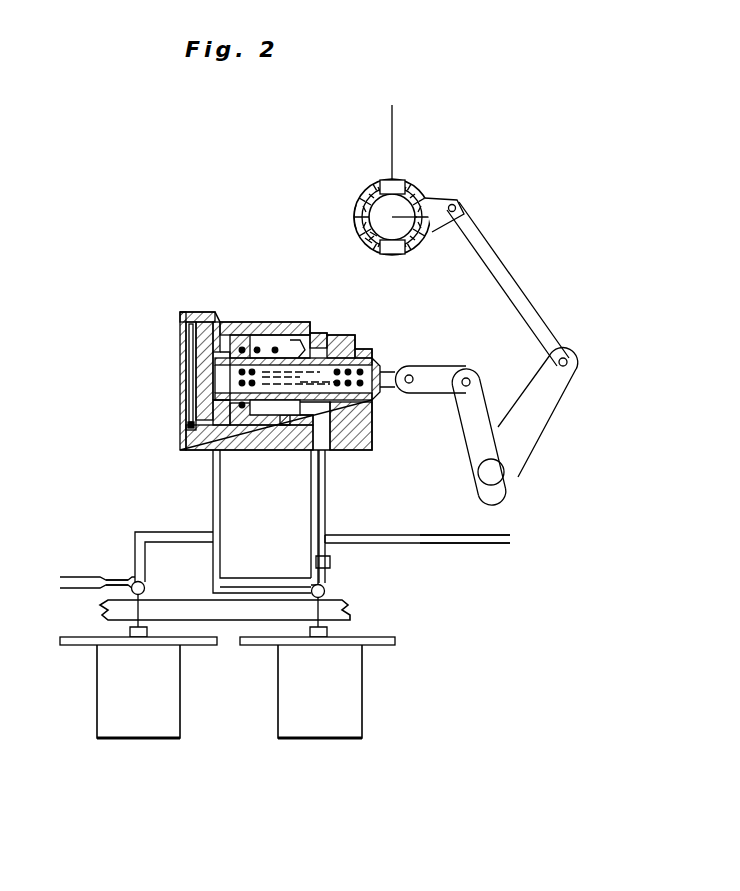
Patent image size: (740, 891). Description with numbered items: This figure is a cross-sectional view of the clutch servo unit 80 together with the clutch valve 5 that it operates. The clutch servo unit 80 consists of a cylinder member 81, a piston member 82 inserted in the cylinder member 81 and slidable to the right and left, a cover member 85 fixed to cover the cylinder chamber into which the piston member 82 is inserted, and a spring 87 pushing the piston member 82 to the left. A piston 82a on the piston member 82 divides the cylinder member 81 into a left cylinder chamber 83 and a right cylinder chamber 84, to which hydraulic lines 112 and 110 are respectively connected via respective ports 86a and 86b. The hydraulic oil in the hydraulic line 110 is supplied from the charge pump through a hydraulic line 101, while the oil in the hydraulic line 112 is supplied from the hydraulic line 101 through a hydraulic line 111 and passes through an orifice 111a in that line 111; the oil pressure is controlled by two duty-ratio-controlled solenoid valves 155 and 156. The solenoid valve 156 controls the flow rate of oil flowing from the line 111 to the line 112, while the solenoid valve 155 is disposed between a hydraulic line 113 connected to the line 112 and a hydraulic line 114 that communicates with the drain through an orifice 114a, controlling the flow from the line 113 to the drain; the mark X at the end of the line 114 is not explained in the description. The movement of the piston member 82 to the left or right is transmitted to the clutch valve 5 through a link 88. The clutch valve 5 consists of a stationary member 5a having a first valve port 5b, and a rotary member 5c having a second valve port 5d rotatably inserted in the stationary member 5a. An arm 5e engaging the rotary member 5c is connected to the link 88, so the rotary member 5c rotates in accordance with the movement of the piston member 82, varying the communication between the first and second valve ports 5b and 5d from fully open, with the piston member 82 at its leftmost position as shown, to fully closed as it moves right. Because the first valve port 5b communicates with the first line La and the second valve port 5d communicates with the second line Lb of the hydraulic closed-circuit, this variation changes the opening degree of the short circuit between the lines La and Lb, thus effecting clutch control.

The first line La is at (392, 135).
The second line Lb is at (432, 224).
The clutch valve 5 is at (438, 179).
The stationary member 5a is at (356, 217).
The first valve port 5b is at (385, 182).
The rotary member 5c is at (372, 242).
The second valve port 5d is at (395, 254).
The arm 5e is at (457, 201).
The link 88 is at (550, 316).
The clutch servo unit 80 is at (192, 298).
The cylinder member 81 is at (276, 322).
The piston member 82 is at (327, 356).
The piston 82a is at (227, 342).
The left cylinder chamber 83 is at (200, 350).
The right cylinder chamber 84 is at (296, 342).
The cover member 85 is at (196, 342).
The port 86a is at (213, 450).
The port 86b is at (330, 452).
The spring 87 is at (240, 450).
The hydraulic line 110 is at (320, 509).
The hydraulic line 111 is at (326, 570).
The orifice 111a is at (330, 548).
The hydraulic line 112 is at (218, 507).
The hydraulic line 113 is at (162, 532).
The hydraulic line 114 is at (66, 577).
The orifice 114a is at (114, 580).
The hydraulic line 101 is at (470, 545).
The direction mark X is at (49, 586).
The solenoid valve 155 is at (150, 727).
The solenoid valve 156 is at (334, 728).